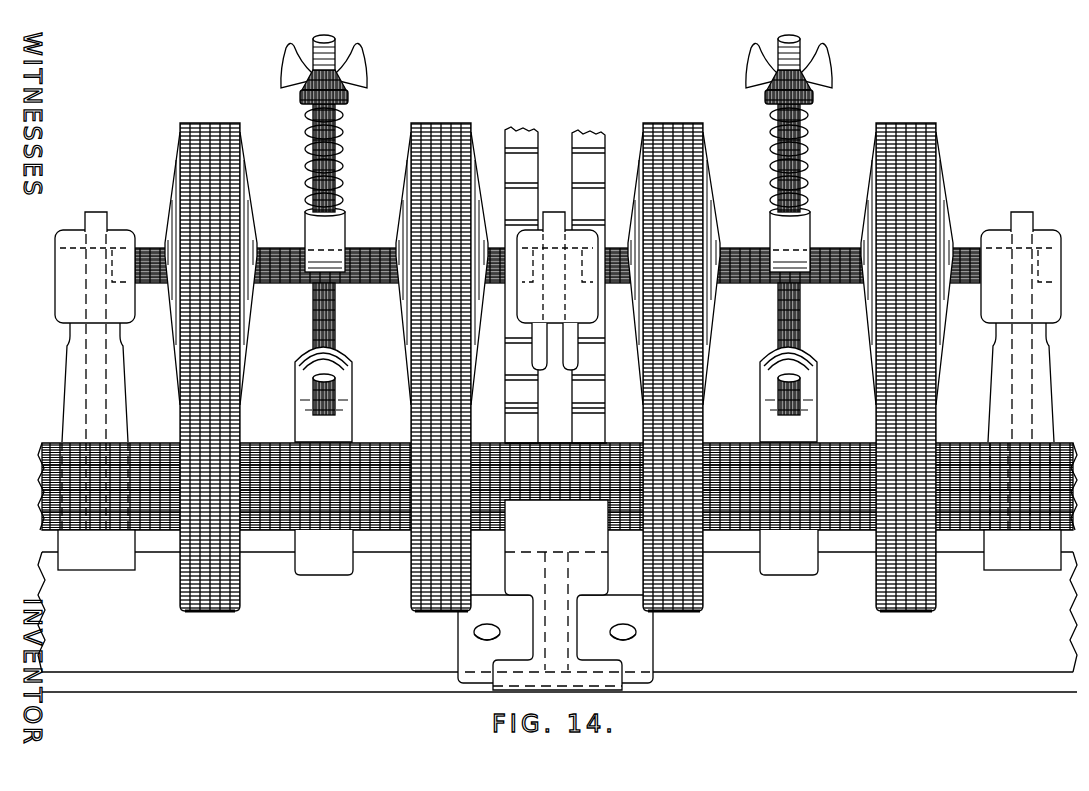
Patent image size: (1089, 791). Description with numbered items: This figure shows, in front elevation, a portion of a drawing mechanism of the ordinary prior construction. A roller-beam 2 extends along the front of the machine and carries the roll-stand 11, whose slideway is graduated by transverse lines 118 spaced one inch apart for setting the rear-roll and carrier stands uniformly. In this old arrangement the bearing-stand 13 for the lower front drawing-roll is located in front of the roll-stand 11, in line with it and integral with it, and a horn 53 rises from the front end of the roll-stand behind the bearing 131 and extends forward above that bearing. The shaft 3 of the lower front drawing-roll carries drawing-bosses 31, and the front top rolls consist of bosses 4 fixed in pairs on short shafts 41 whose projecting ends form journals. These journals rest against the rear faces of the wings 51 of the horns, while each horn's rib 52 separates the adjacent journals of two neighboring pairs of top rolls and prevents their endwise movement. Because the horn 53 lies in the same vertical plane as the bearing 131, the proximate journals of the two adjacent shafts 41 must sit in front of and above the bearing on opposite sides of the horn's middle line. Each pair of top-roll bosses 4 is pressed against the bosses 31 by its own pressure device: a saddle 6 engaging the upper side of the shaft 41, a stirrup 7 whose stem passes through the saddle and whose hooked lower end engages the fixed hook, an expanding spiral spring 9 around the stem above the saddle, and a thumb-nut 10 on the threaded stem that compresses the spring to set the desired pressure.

The roller-beam 2 is at (300, 693).
The shaft of the lower front drawing-roll 3 is at (268, 530).
The bosses of the front top rolls 4 is at (230, 160).
The saddle 6 is at (318, 228).
The stirrup 7 is at (338, 312).
The expanding spiral spring 9 is at (345, 124).
The thumb-nut 10 is at (355, 76).
The roll-stand 11 is at (583, 136).
The bearing-stand 13 is at (470, 650).
The drawing-bosses of the lower front drawing-roll 31 is at (213, 612).
The short shaft of the front top rolls 41 is at (372, 250).
The wings of the horn 51 is at (78, 230).
The rib of the horn 52 is at (97, 212).
The horn 53 is at (553, 356).
The transverse lines 118 is at (603, 150).
The bearing 131 is at (612, 560).